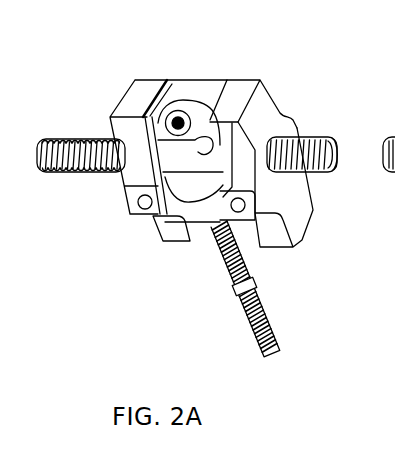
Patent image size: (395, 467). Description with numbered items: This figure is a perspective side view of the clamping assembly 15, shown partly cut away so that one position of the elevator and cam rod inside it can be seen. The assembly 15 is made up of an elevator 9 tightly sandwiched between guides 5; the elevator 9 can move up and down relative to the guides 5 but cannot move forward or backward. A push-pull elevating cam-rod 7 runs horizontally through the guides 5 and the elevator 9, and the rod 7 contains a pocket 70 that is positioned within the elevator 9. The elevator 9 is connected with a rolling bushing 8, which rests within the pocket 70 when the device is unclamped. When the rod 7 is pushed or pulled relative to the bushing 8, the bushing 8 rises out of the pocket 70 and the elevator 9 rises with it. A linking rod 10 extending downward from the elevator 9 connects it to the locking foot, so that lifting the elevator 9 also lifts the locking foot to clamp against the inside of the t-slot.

The guides 5 is at (322, 221).
The push-pull elevating cam-rod 7 is at (78, 180).
The rolling bushing 8 is at (158, 115).
The elevator 9 is at (202, 73).
The linking rod 10 is at (230, 292).
The clamping assembly 15 is at (243, 72).
The pocket 70 is at (190, 151).